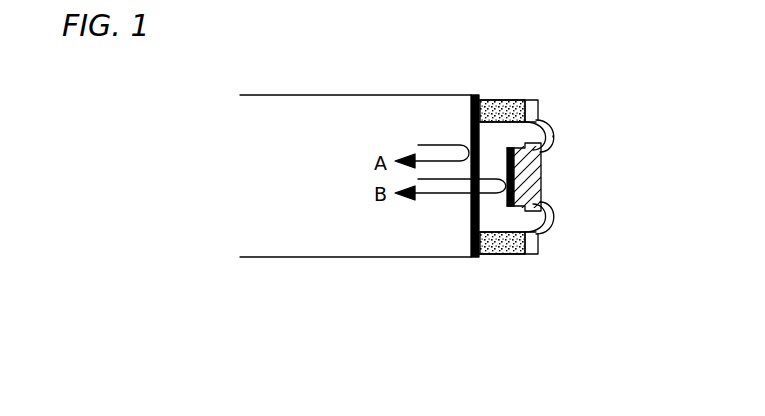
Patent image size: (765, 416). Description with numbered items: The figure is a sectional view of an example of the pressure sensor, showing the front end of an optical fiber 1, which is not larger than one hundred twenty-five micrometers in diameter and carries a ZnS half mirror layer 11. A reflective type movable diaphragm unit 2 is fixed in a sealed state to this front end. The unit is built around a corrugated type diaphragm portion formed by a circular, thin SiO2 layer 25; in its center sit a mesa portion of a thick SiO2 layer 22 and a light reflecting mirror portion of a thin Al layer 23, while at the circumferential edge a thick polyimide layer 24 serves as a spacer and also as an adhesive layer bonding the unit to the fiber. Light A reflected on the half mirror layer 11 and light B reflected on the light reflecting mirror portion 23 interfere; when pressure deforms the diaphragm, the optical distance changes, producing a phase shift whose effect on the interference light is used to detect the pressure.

The optical fiber 1 is at (387, 228).
The ZnS layer (half mirror layer) 11 is at (472, 226).
The reflective type movable diaphragm unit 2 is at (594, 176).
The SiO2 layer (mesa portion) 22 is at (523, 175).
The Al layer (light reflecting mirror portion) 23 is at (541, 199).
The polyimide layer (spacer serving also as adhesive layer) 24 is at (503, 101).
The SiO2 layer (corrugated type diaphragm portion) 25 is at (547, 128).